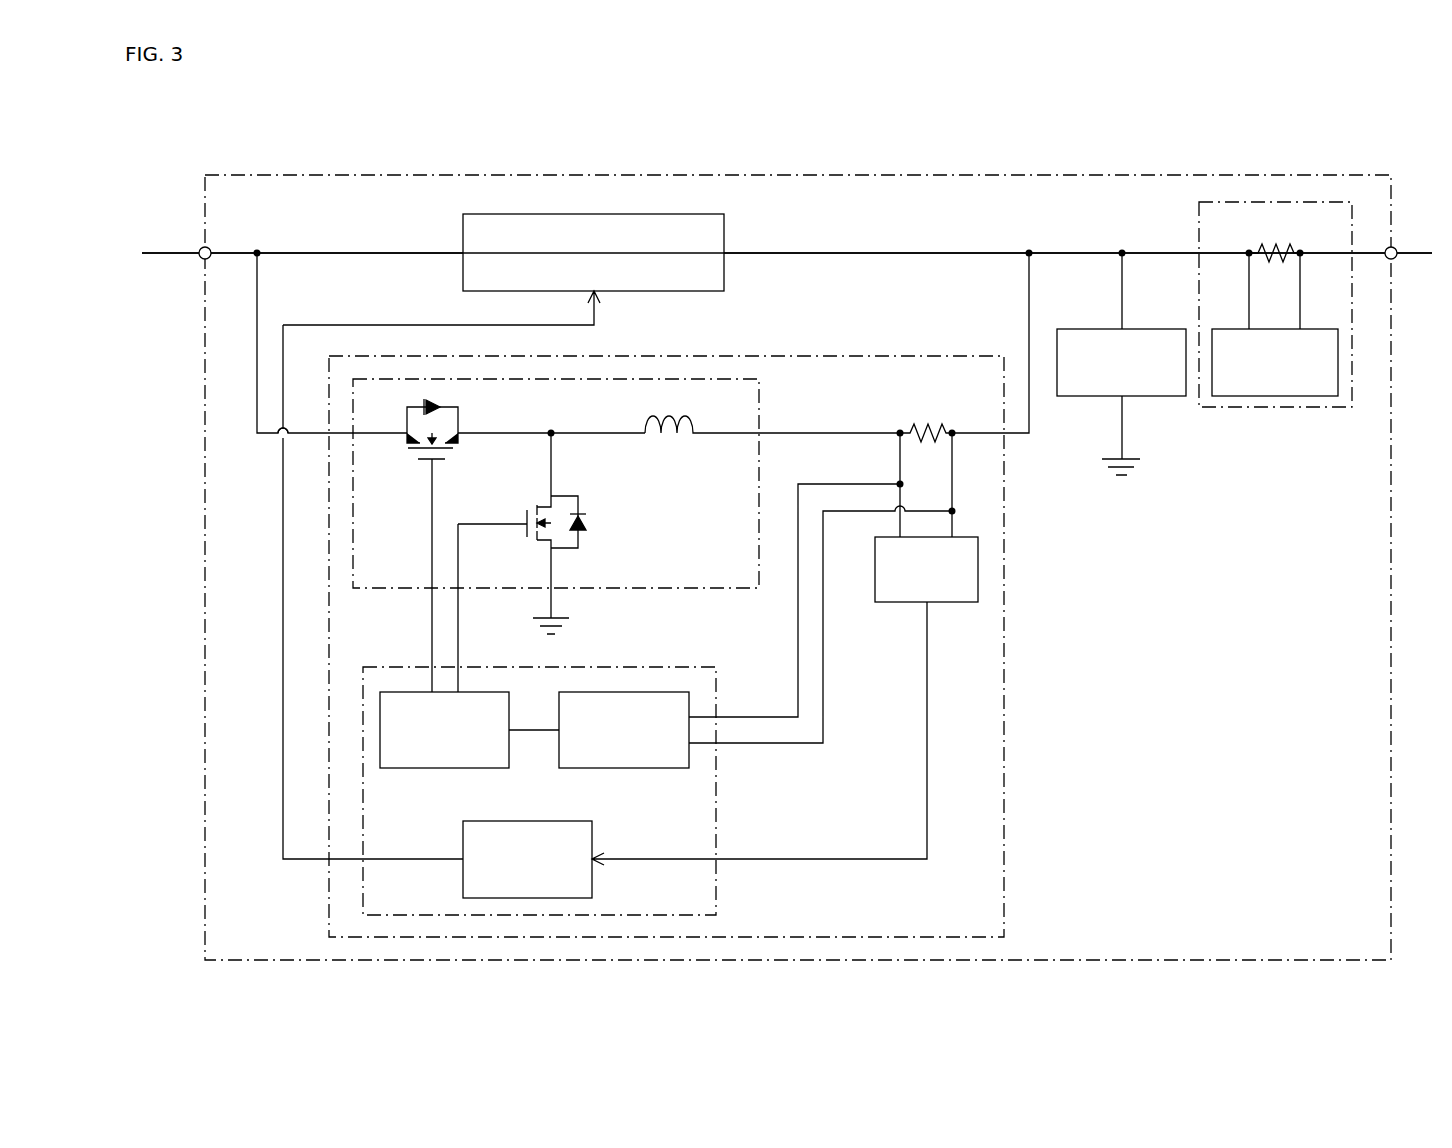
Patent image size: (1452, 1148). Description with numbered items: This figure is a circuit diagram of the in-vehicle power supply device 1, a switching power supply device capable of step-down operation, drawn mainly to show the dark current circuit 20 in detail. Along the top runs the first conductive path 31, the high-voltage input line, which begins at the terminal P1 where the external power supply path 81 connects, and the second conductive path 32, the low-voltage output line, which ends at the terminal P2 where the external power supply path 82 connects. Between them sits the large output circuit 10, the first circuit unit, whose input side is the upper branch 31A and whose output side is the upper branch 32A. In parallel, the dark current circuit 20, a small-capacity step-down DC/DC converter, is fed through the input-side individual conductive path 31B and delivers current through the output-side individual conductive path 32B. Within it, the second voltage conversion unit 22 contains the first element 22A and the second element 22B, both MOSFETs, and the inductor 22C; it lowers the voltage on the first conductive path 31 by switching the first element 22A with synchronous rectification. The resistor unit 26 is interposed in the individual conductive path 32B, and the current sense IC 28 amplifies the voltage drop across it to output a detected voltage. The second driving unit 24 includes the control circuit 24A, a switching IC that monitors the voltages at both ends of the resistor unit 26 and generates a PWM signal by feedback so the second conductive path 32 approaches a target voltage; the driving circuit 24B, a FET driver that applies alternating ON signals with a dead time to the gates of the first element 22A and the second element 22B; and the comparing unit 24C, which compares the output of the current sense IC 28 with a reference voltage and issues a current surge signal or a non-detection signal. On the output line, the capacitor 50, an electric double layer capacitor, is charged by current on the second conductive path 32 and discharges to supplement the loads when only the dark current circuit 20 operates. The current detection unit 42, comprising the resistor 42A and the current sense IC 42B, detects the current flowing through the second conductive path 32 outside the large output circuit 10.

The power supply device 1 is at (1172, 175).
The large output circuit 10 is at (724, 230).
The dark current circuit 20 is at (780, 353).
The second voltage conversion unit 22 is at (759, 408).
The first element 22A is at (448, 437).
The second element 22B is at (542, 540).
The inductor 22C is at (685, 440).
The second driving unit 24 is at (615, 667).
The control circuit 24A is at (672, 768).
The driving circuit 24B is at (483, 692).
The comparing unit 24C is at (548, 821).
The resistor unit 26 is at (918, 428).
The current sense IC 28 is at (893, 602).
The first conductive path 31 is at (228, 258).
The first conductive path portion 31A is at (310, 253).
The input-side individual conductive path 31B is at (258, 292).
The second conductive path 32 is at (1157, 253).
The second conductive path portion 32A is at (912, 253).
The output-side individual conductive path 32B is at (1029, 277).
The current detection unit 42 is at (1318, 407).
The resistor 42A is at (1272, 248).
The current sense IC 42B is at (1265, 396).
The capacitor 50 is at (1165, 396).
The power supply path 81 is at (165, 252).
The power supply path 82 is at (1420, 258).
The terminal P1 is at (210, 248).
The terminal P2 is at (1396, 248).